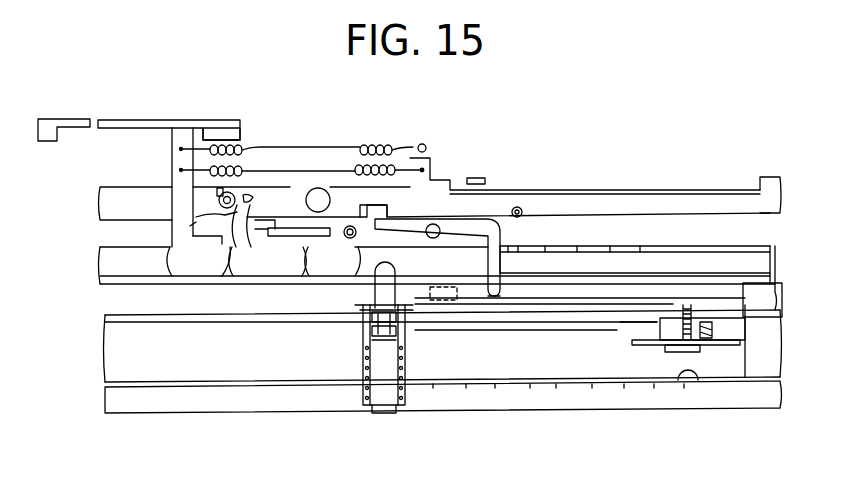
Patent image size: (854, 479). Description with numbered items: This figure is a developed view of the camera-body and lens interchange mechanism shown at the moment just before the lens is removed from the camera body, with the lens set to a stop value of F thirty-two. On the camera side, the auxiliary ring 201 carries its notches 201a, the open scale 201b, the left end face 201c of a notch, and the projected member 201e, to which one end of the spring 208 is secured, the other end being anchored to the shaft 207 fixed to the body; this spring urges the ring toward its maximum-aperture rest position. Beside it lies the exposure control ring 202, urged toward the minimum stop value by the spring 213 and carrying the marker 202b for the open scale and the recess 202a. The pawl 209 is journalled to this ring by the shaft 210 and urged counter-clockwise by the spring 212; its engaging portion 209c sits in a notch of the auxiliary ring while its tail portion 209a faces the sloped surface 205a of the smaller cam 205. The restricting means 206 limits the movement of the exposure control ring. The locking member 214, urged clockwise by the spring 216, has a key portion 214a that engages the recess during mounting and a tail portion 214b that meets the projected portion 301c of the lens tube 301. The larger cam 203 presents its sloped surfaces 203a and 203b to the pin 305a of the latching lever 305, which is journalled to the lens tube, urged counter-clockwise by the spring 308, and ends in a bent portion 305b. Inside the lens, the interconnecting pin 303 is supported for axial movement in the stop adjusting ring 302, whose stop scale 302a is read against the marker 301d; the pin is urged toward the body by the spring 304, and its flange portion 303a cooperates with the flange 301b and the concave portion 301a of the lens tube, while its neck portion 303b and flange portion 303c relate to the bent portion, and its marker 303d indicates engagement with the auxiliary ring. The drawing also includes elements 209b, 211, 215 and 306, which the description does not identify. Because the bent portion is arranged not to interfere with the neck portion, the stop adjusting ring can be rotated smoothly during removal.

The auxiliary ring 201 is at (110, 263).
The notches 201a is at (295, 298).
The open scale 201b is at (558, 244).
The left end face of notch 201c is at (198, 261).
The projected member 201e is at (178, 140).
The exposure control ring 202 is at (108, 205).
The recess 202a is at (361, 202).
The marker 202b is at (517, 206).
The larger cam 203 is at (660, 292).
The sloped surface 203a is at (690, 295).
The sloped surface 203b is at (450, 287).
The smaller cam 205 is at (314, 252).
The sloped surface 205a is at (286, 200).
The restricting means 206 is at (470, 177).
The shaft 207 is at (420, 142).
The spring 208 is at (367, 145).
The pawl 209 is at (305, 192).
The tail portion 209a is at (268, 249).
The spring rod 209b is at (268, 168).
The engaging portion 209c is at (232, 250).
The shaft 210 is at (366, 168).
The pivot pin 211 is at (220, 192).
The spring 212 is at (192, 226).
The spring 213 is at (248, 155).
The locking member 214 is at (220, 127).
The key portion 214a is at (393, 218).
The tail portion 214b is at (498, 252).
The plunger 215 is at (383, 277).
The spring 216 is at (373, 298).
The lens tube 301 is at (127, 337).
The concave portion 301a is at (630, 328).
The flange 301b is at (476, 333).
The projected portion 301c is at (757, 290).
The marker 301d is at (695, 373).
The stop adjusting ring 302 is at (112, 404).
The stop scale 302a is at (493, 412).
The interconnecting pin 303 is at (383, 410).
The flange portion 303a is at (372, 318).
The neck portion 303b is at (410, 348).
The flange portion 303c is at (373, 338).
The marker 303d is at (386, 410).
The spring 304 is at (370, 388).
The latching lever 305 is at (660, 342).
The pin 305a is at (708, 330).
The bent portion 305b is at (632, 343).
The roller 306 is at (685, 362).
The spring 308 is at (712, 341).